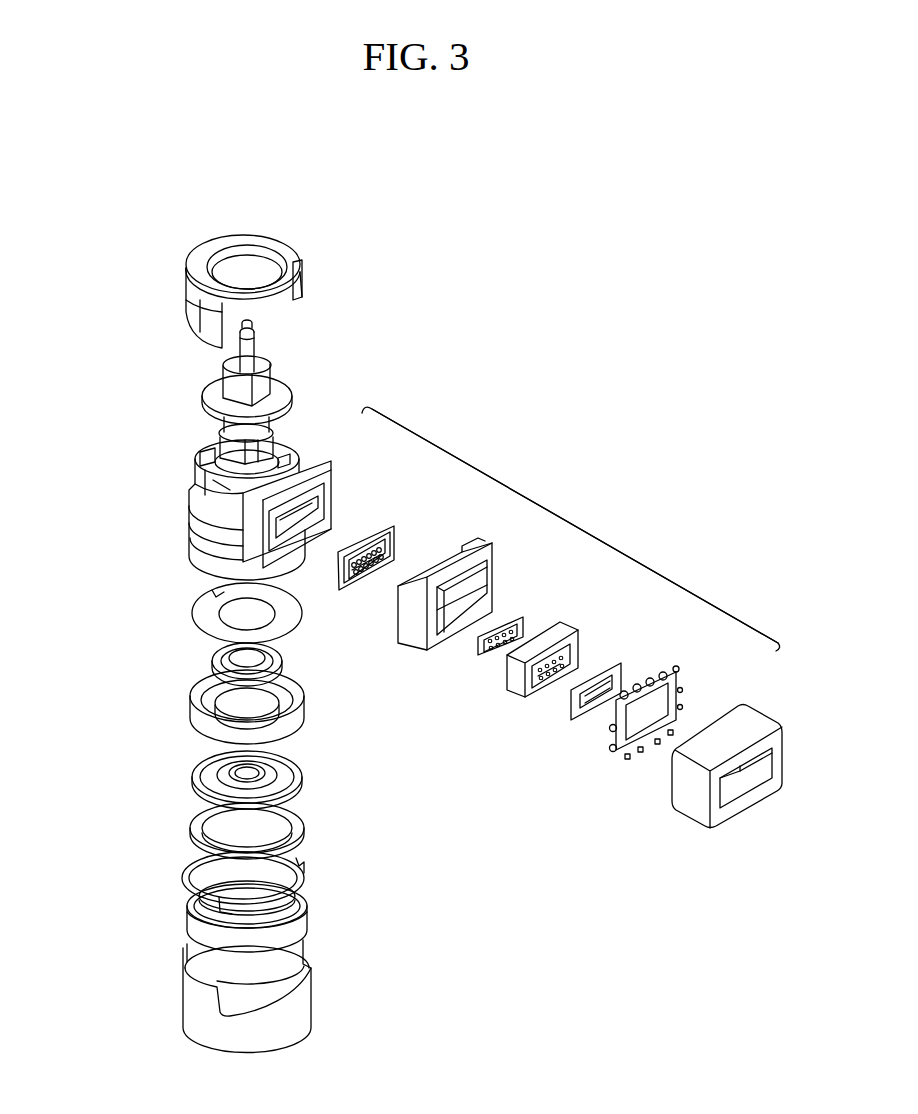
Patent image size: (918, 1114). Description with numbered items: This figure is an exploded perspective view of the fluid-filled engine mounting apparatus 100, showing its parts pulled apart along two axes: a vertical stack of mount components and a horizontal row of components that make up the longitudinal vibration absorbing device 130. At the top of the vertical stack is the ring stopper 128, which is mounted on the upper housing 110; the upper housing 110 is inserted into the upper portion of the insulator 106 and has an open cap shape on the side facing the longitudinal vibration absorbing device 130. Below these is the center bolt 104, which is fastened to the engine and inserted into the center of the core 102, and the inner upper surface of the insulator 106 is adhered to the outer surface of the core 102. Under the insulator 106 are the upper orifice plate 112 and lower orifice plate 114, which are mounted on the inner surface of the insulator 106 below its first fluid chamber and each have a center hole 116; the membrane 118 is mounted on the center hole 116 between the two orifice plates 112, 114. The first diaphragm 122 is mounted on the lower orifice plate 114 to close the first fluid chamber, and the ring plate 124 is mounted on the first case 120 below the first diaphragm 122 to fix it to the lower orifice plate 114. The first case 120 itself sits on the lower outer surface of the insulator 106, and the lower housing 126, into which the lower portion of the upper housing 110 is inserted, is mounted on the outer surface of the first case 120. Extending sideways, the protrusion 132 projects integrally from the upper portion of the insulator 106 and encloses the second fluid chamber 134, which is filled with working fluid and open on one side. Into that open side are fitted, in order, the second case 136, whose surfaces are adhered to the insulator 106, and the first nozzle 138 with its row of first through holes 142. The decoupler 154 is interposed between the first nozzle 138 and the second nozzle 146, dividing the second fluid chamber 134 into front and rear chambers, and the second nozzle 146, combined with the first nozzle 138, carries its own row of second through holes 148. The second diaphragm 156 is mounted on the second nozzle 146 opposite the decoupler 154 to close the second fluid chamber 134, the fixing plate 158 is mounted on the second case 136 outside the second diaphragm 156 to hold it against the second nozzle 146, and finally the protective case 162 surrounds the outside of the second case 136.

The fluid-filled engine mounting apparatus 100 is at (571, 418).
The core 102 is at (282, 408).
The center bolt 104 is at (288, 345).
The insulator 106 is at (196, 510).
The upper housing 110 is at (207, 304).
The upper orifice plate 112 is at (199, 613).
The lower orifice plate 114 is at (200, 707).
The center hole 116 is at (298, 662).
The membrane 118 is at (196, 664).
The first case 120 is at (201, 902).
The first diaphragm 122 is at (199, 780).
The ring plate 124 is at (200, 831).
The lower housing 126 is at (204, 996).
The ring stopper 128 is at (238, 234).
The longitudinal vibration absorbing device 130 is at (575, 526).
The protrusion 132 is at (311, 492).
The second fluid chamber 134 is at (353, 492).
The second case 136 is at (458, 574).
The first nozzle 138 is at (405, 533).
The first through holes 142 is at (363, 602).
The second nozzle 146 is at (564, 634).
The second through holes 148 is at (546, 715).
The decoupler 154 is at (528, 598).
The second diaphragm 156 is at (620, 661).
The fixing plate 158 is at (665, 694).
The protective case 162 is at (727, 737).